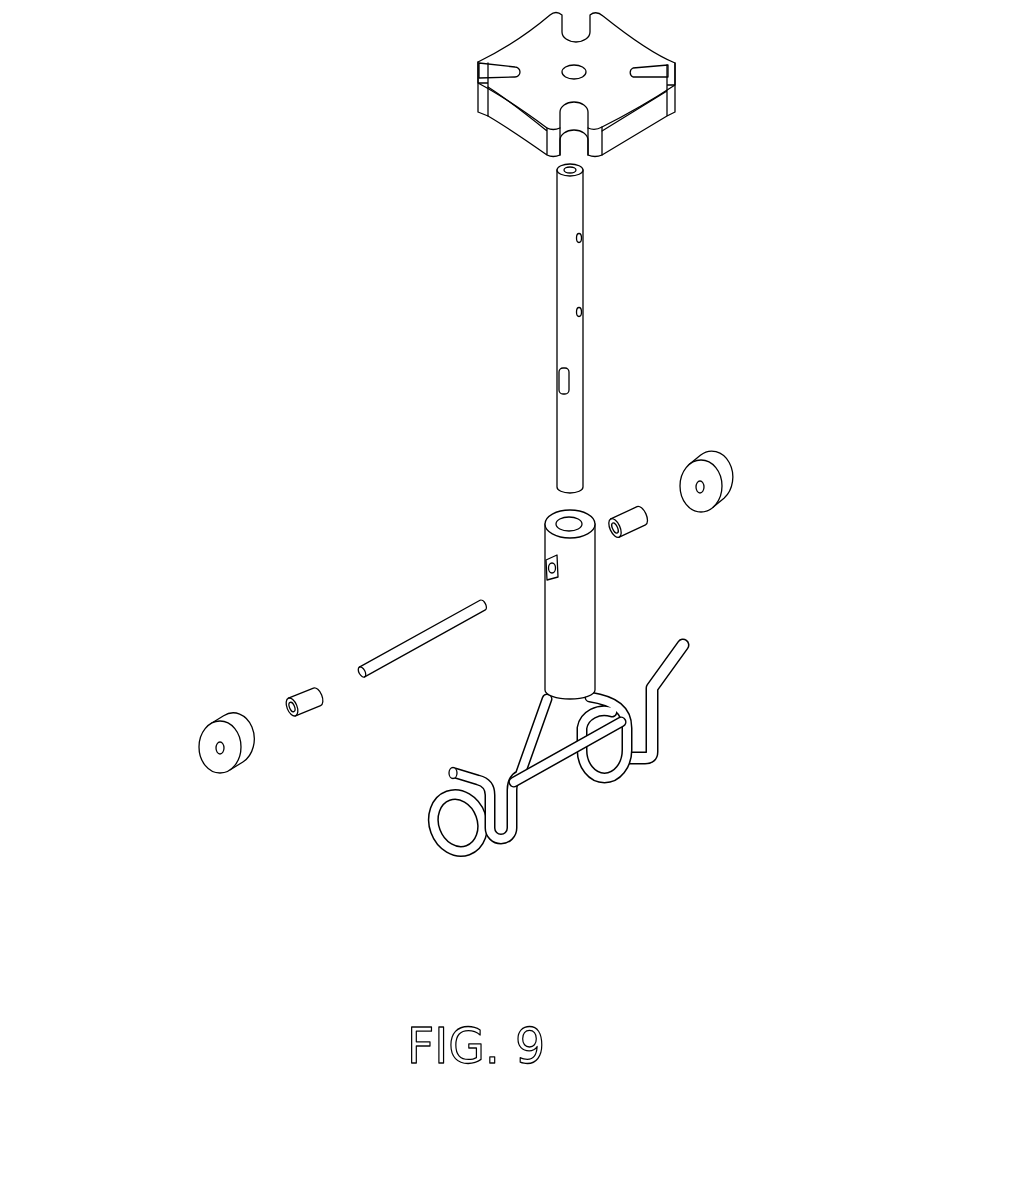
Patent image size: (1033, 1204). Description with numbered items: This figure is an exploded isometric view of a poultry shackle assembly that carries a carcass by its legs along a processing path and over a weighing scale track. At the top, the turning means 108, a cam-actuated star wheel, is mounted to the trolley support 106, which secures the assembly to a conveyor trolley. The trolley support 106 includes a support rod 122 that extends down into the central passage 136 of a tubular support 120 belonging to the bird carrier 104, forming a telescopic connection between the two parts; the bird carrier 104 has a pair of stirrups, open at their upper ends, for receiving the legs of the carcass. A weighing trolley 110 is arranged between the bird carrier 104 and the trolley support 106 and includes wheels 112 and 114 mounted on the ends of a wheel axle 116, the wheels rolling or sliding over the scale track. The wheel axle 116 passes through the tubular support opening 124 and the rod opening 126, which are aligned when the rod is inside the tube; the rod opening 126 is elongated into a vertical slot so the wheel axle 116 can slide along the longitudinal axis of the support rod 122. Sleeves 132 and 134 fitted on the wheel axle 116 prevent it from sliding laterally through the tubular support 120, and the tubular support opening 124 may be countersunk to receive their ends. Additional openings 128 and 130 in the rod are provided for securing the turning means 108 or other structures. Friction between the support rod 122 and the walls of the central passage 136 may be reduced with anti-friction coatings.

The bird carrier 104 is at (622, 820).
The trolley support 106 is at (758, 208).
The turning means 108 is at (545, 85).
The weighing trolley 110 is at (172, 773).
The wheel 112 is at (217, 722).
The wheel 114 is at (715, 467).
The wheel axle 116 is at (430, 632).
The tubular support 120 is at (579, 642).
The support rod 122 is at (572, 283).
The tubular support opening 124 is at (546, 560).
The rod opening 126 is at (557, 377).
The opening 128 is at (584, 238).
The opening 130 is at (584, 313).
The sleeve 132 is at (303, 695).
The sleeve 134 is at (637, 523).
The central passage 136 is at (577, 518).